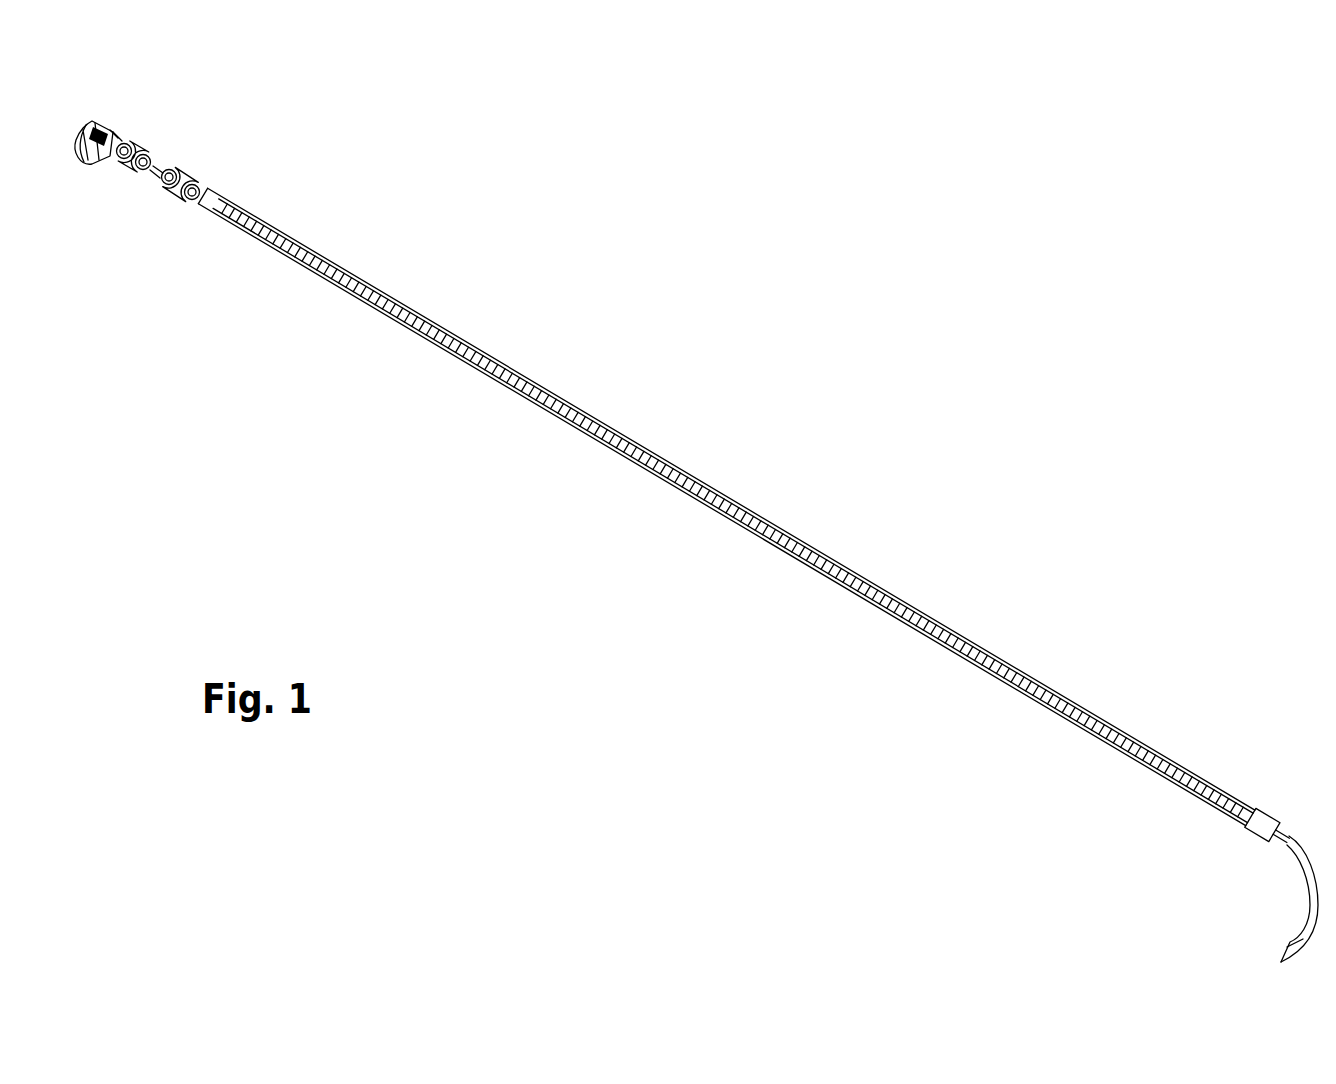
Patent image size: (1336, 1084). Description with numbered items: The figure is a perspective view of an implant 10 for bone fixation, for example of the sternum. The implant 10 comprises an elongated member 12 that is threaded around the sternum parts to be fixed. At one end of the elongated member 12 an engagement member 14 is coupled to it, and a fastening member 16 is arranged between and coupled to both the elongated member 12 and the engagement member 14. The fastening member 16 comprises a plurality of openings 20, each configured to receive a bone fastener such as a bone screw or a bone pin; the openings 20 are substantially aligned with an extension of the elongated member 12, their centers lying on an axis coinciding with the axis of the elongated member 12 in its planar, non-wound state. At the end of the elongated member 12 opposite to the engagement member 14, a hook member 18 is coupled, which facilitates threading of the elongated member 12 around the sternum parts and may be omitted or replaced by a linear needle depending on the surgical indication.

The implant 10 is at (677, 272).
The elongated member 12 is at (772, 524).
The engagement member 14 is at (95, 120).
The fastening member 16 is at (152, 155).
The hook member 18 is at (1290, 838).
The openings 20 is at (193, 183).